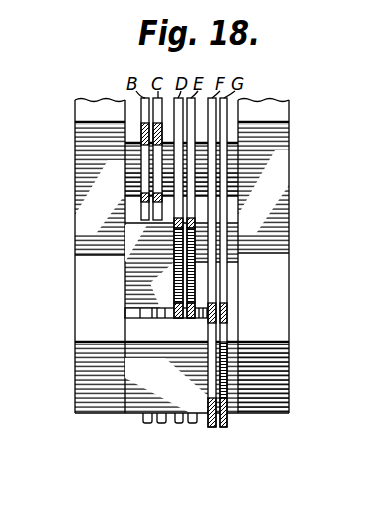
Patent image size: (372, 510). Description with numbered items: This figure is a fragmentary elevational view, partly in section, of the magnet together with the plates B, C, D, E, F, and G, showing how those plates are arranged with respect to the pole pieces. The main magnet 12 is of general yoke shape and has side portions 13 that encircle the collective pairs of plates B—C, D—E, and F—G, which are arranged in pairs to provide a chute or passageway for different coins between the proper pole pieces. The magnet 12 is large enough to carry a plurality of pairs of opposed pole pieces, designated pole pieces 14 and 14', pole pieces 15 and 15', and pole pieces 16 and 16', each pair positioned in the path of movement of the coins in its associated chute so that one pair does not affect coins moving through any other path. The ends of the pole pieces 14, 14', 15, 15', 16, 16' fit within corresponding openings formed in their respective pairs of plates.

The main magnet 12 is at (275, 237).
The side portions 13 is at (87, 217).
The pole piece 14 is at (131, 171).
The pole piece 14' is at (131, 170).
The pole piece 15 is at (136, 270).
The pole piece 15' is at (237, 255).
The pole piece 16 is at (182, 397).
The pole piece 16' is at (263, 398).